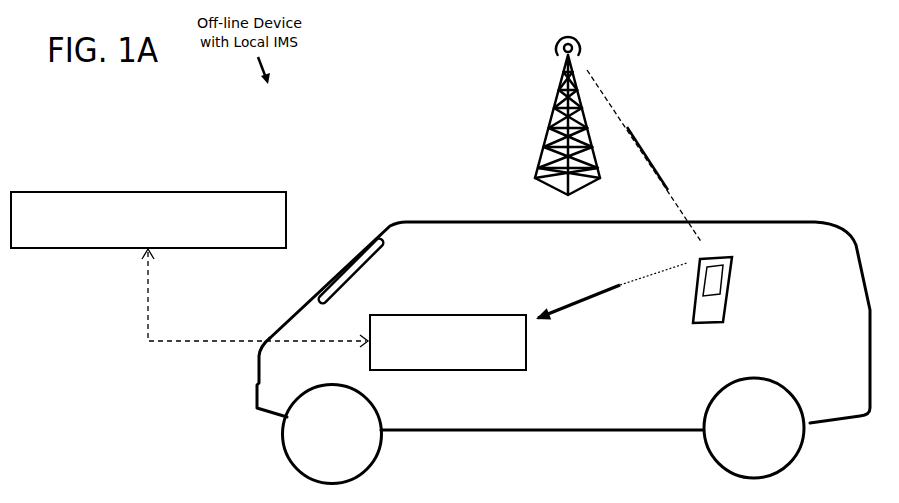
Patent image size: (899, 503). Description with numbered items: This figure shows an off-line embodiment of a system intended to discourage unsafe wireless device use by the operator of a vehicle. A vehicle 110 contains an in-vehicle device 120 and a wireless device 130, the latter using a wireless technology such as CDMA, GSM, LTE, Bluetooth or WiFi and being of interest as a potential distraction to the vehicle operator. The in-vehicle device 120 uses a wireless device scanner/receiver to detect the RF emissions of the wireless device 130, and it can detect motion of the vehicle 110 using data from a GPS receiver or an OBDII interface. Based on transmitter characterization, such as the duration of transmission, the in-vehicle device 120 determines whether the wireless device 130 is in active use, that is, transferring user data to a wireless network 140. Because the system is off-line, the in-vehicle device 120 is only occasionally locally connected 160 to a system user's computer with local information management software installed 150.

The vehicle 110 is at (463, 430).
The in-vehicle device 120 is at (443, 314).
The wireless device 130 is at (732, 277).
The wireless network 140 is at (545, 145).
The computer with local information management software installed 150 is at (226, 192).
The local connection 160 is at (182, 341).